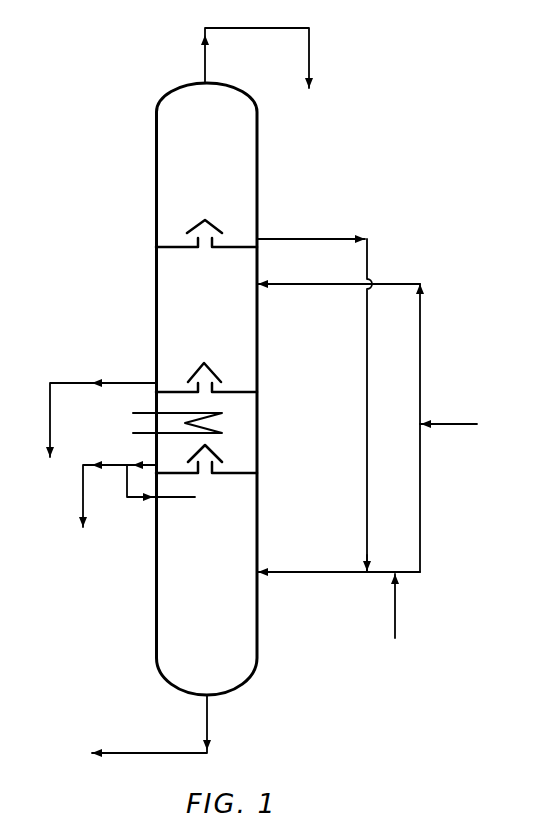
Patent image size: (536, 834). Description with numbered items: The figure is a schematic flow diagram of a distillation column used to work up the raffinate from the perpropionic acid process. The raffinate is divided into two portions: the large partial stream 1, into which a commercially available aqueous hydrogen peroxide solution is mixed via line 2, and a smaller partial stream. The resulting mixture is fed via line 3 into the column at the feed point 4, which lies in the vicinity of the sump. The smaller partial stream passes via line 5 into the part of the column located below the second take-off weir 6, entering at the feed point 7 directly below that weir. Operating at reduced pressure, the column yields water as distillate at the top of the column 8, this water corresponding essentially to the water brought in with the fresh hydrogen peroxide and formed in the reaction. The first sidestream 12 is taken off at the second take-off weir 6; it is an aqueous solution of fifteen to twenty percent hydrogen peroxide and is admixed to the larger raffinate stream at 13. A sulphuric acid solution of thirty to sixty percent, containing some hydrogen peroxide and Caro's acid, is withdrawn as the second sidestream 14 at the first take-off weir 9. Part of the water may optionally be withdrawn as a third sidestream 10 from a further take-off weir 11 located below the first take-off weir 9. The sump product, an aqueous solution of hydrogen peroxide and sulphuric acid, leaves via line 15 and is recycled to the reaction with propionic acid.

The large partial stream 1 is at (421, 478).
The line 2 is at (397, 612).
The line 3 is at (306, 575).
The feed point 4 is at (262, 580).
The line 5 is at (421, 345).
The second take-off weir 6 is at (173, 244).
The feed point 7 is at (261, 290).
The top of the column 8 is at (207, 53).
The first take-off weir 9 is at (240, 391).
The third sidestream 10 is at (86, 498).
The third take-off weir 11 is at (253, 472).
The first sidestream 12 is at (312, 238).
The admixing point 13 is at (365, 565).
The second sidestream 14 is at (127, 382).
The line 15 is at (209, 722).